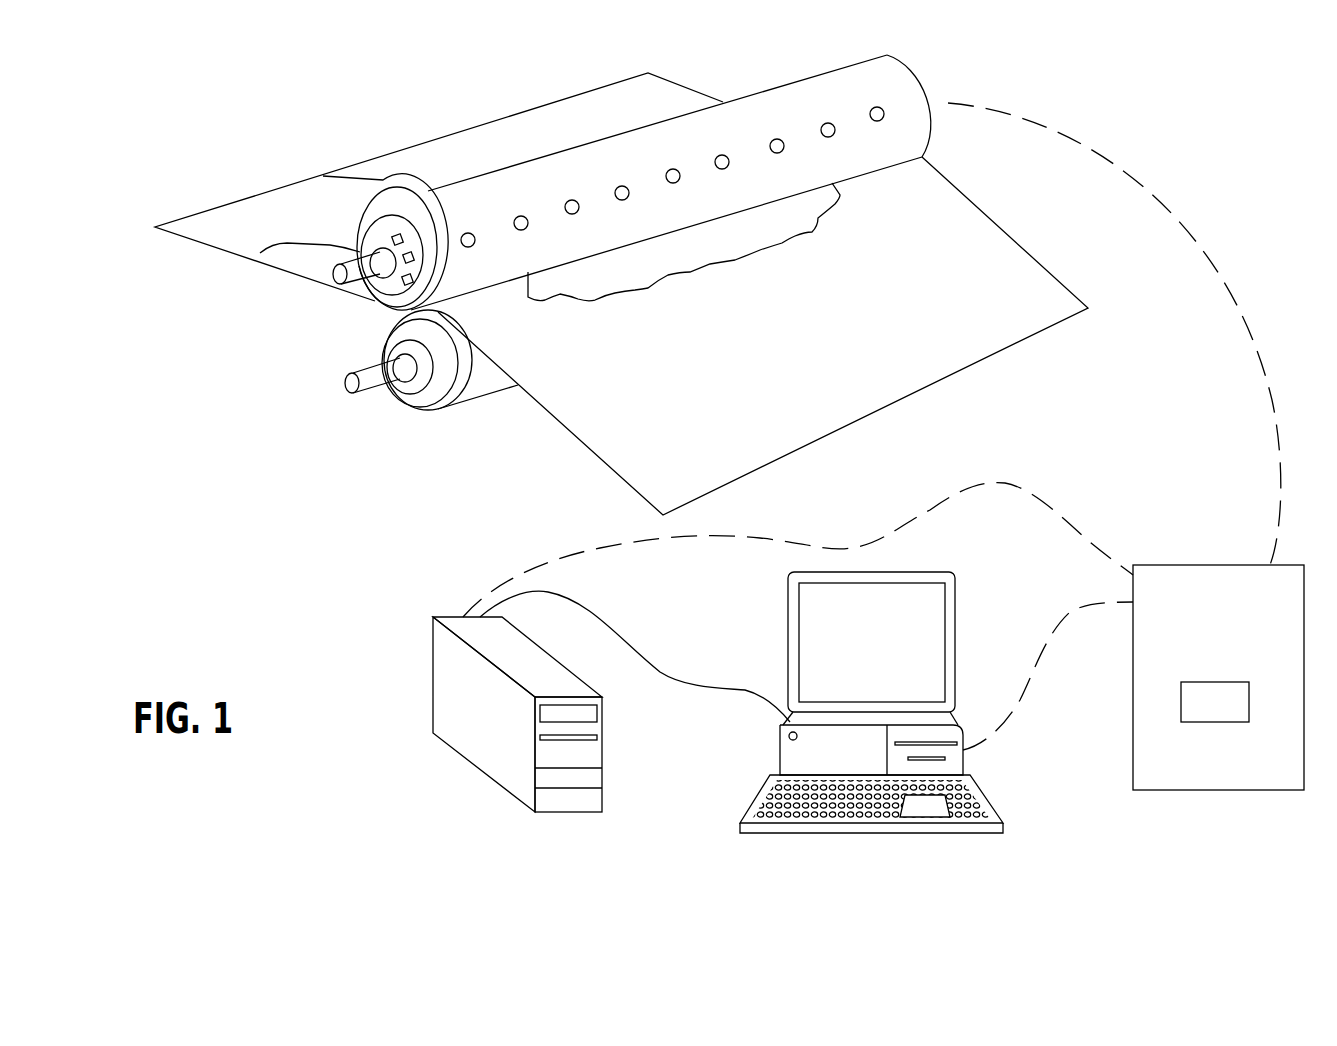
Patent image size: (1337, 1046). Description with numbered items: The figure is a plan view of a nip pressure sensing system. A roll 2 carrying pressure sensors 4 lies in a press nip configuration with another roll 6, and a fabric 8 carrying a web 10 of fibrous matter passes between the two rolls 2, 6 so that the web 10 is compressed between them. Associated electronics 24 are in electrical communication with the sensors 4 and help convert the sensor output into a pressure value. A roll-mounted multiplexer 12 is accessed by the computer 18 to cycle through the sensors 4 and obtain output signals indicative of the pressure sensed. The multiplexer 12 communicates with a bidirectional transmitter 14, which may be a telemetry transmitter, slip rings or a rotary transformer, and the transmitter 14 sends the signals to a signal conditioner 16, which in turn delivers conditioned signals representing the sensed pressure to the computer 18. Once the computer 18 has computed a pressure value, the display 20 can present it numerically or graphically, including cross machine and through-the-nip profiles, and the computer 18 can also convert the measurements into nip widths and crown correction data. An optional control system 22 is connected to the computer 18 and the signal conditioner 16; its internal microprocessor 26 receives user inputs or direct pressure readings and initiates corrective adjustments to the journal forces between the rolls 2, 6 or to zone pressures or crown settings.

The roll 2 is at (738, 98).
The pressure sensors 4 is at (882, 107).
The roll 6 is at (487, 395).
The fabric 8 is at (849, 414).
The web 10 is at (697, 257).
The multiplexer 12 is at (323, 176).
The transmitter 14 is at (260, 253).
The signal conditioner 16 is at (433, 708).
The computer 18 is at (780, 752).
The display 20 is at (880, 571).
The control system 22 is at (1221, 565).
The associated electronics 24 is at (383, 300).
The microprocessor 26 is at (1250, 698).